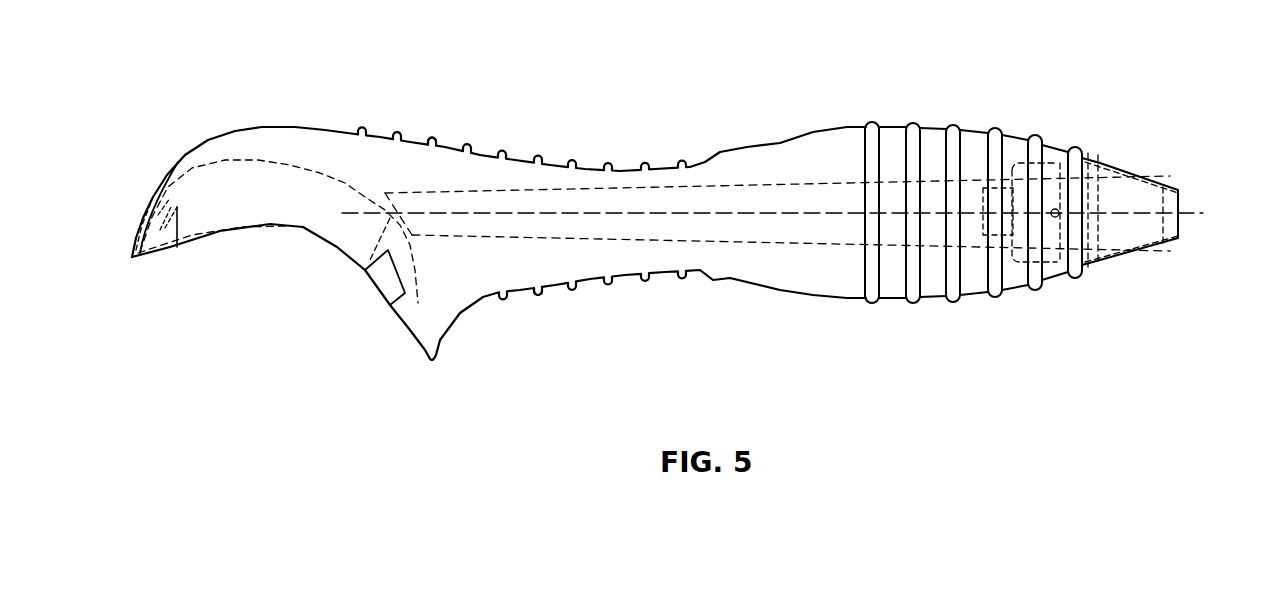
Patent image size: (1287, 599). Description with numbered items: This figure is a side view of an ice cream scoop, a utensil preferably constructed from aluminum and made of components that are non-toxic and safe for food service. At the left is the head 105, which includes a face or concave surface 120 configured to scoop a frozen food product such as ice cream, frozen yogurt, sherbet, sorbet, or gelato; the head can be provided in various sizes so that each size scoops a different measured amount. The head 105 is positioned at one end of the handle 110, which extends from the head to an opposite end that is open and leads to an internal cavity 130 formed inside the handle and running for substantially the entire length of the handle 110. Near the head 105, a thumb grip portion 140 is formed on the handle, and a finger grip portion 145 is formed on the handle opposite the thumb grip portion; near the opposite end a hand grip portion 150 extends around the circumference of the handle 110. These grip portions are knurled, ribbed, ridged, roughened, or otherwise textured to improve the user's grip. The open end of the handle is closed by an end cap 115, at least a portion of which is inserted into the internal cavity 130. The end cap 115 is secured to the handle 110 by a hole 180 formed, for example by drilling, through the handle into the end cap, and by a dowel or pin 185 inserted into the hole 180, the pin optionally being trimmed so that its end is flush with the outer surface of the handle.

The head 105 is at (257, 140).
The concave surface 120 is at (320, 237).
The finger grip portion 145 is at (433, 138).
The handle 110 is at (510, 177).
The thumb grip portion 140 is at (540, 287).
The internal cavity 130 is at (783, 240).
The hand grip portion 150 is at (873, 122).
The hole 180 is at (1063, 213).
The pin 185 is at (1058, 208).
The end cap 115 is at (1187, 212).